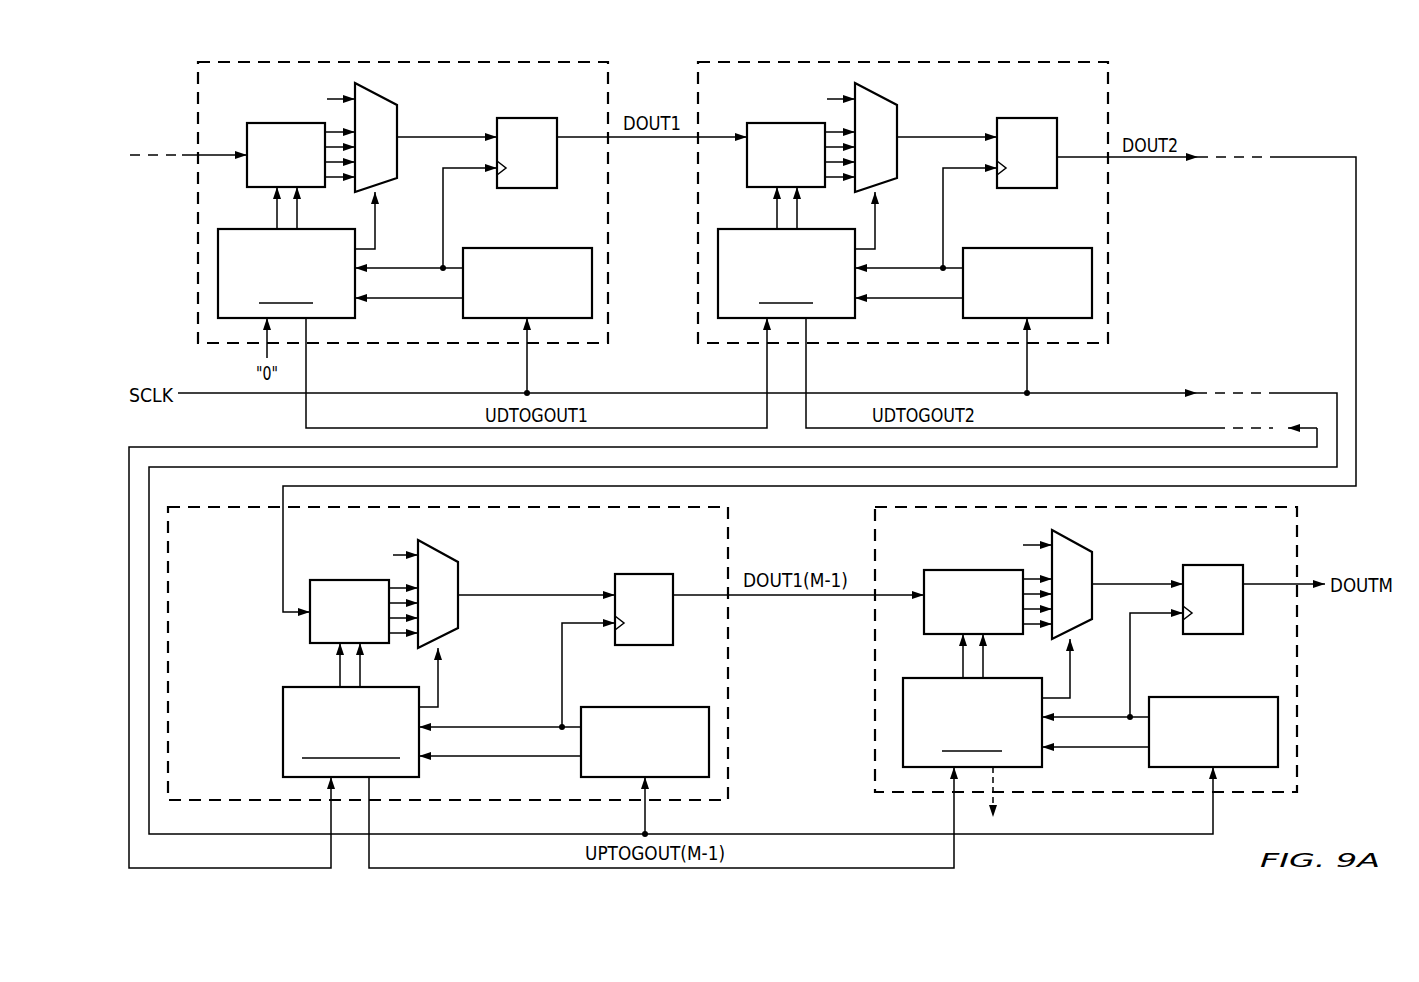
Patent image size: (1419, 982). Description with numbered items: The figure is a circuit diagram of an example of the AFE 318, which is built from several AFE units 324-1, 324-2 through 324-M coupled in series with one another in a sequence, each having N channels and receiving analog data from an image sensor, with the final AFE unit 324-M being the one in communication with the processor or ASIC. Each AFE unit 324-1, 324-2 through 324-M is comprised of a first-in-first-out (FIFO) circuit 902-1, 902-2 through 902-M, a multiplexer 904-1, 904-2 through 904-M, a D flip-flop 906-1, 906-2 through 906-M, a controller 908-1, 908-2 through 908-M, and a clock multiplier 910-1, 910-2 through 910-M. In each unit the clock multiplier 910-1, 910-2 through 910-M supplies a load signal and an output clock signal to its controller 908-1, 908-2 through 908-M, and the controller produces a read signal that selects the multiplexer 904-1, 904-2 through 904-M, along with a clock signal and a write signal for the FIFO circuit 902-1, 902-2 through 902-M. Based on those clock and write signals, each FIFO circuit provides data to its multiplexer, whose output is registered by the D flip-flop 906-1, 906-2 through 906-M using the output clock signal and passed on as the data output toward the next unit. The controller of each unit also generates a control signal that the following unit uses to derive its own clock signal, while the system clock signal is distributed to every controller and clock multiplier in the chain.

The AFE 318 is at (1277, 108).
The AFE unit 324-1 is at (570, 343).
The AFE unit 324-2 is at (1111, 268).
The AFE unit 324-M is at (1297, 715).
The first-in-first-out (FIFO) circuit 902-1 is at (258, 123).
The first-in-first-out (FIFO) circuit 902-2 is at (758, 123).
The first-in-first-out (FIFO) circuit 902-M is at (937, 570).
The multiplexer 904-1 is at (397, 118).
The multiplexer 904-2 is at (897, 118).
The multiplexer 904-M is at (1092, 565).
The D flip-flop 906-1 is at (530, 118).
The D flip-flop 906-2 is at (1030, 118).
The D flip-flop 906-M is at (1227, 545).
The controller 908-1 is at (310, 252).
The controller 908-2 is at (810, 252).
The controller 908-M is at (1001, 700).
The clock multiplier 910-1 is at (552, 248).
The clock multiplier 910-2 is at (1052, 248).
The clock multiplier 910-M is at (1250, 678).